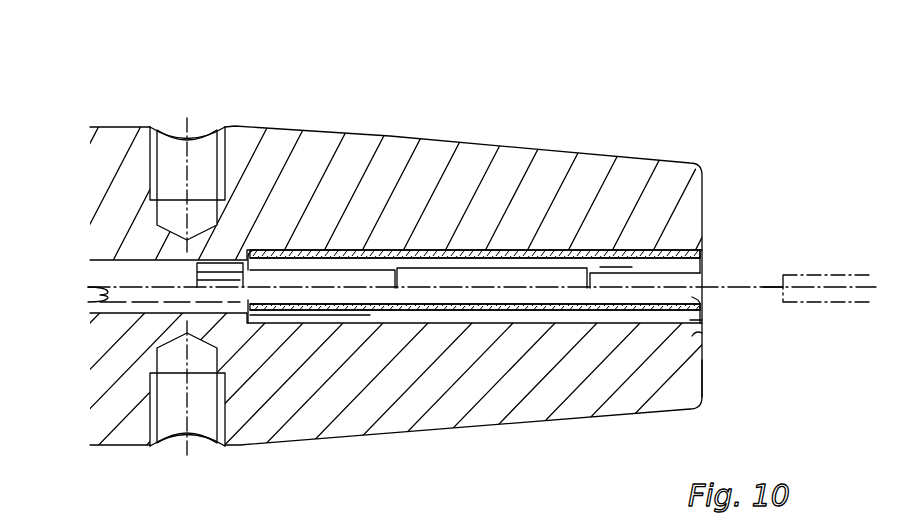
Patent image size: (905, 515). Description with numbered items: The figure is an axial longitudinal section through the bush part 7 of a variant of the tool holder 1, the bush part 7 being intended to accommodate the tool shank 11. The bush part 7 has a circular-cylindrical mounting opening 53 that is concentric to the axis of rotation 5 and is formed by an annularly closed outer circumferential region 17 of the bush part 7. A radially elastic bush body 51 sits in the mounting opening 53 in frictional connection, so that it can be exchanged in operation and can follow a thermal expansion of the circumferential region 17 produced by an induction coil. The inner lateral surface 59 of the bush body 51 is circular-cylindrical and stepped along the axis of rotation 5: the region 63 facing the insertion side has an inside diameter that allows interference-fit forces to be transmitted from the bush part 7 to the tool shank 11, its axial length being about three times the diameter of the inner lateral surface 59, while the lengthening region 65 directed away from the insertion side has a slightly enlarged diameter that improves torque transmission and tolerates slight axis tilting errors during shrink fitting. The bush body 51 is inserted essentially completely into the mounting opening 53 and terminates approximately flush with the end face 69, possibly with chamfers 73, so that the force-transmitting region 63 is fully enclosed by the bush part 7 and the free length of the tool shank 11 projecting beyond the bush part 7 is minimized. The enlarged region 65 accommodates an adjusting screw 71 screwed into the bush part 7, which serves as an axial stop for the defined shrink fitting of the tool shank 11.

The tool holder 1 is at (92, 100).
The axis of rotation 5 is at (763, 287).
The bush part 7 is at (505, 163).
The tool shank 11 is at (864, 292).
The outer circumferential region 17 is at (590, 398).
The bush body 51 is at (714, 258).
The mounting opening 53 is at (690, 320).
The inner lateral surface 59 is at (692, 297).
The region 63 is at (634, 266).
The region 65 is at (430, 264).
The end face 69 is at (708, 372).
The adjusting screw 71 is at (273, 277).
The chamfers 73 is at (692, 336).